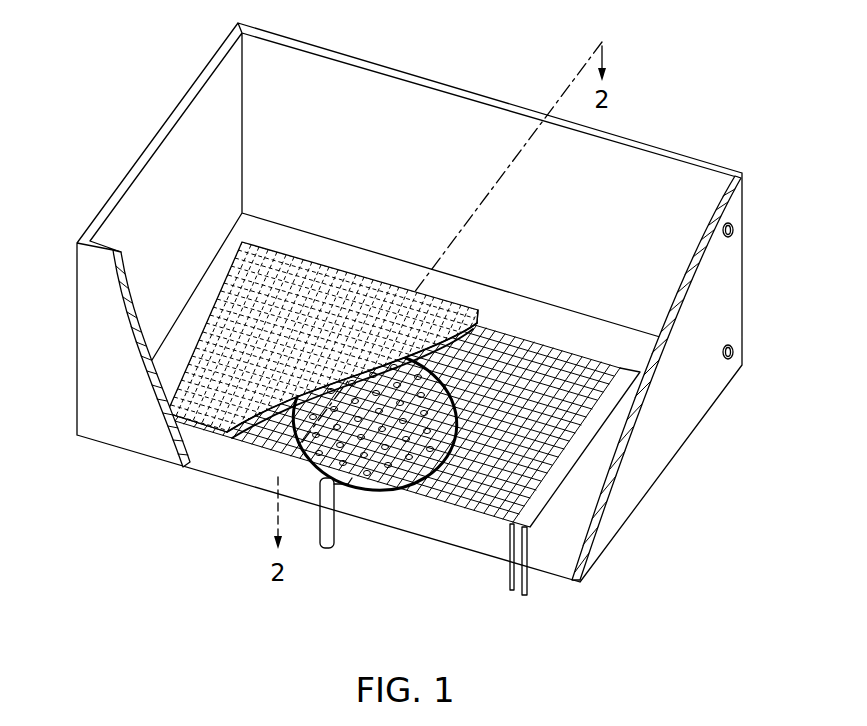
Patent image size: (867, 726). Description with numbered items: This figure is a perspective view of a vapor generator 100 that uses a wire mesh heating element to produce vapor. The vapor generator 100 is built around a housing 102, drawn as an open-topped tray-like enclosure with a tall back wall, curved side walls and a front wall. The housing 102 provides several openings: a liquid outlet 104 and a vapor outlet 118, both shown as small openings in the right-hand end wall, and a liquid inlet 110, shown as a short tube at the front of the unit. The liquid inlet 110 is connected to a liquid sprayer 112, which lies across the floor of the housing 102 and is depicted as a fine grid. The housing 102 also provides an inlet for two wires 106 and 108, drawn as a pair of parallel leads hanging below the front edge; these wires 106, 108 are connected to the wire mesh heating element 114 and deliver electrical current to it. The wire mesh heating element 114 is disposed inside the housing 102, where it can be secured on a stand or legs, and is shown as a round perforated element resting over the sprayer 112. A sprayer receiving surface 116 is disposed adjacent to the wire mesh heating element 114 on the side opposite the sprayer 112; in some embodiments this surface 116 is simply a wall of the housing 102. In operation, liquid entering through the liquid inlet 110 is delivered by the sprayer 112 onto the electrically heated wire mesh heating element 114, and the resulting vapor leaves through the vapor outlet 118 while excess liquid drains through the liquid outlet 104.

The vapor generator 100 is at (201, 514).
The housing 102 is at (637, 483).
The liquid outlet 104 is at (734, 351).
The wire 106 is at (530, 583).
The wire 108 is at (507, 575).
The liquid inlet 110 is at (323, 549).
The liquid sprayer 112 is at (293, 463).
The wire mesh heating element 114 is at (448, 487).
The sprayer receiving surface 116 is at (217, 398).
The vapor outlet 118 is at (734, 229).